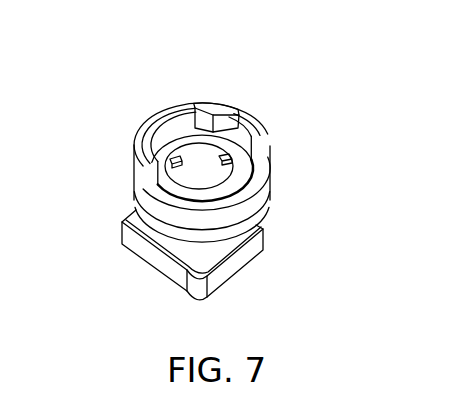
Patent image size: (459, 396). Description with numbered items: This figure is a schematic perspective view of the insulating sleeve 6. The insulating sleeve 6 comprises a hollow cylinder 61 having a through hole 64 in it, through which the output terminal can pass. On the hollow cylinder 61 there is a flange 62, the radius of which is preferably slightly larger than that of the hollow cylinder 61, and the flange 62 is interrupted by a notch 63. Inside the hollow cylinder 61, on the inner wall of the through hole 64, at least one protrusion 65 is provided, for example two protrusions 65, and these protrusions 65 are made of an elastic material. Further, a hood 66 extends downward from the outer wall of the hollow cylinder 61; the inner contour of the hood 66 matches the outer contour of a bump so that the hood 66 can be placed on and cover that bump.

The insulating sleeve 6 is at (201, 157).
The hollow cylinder 61 is at (163, 224).
The flange 62 is at (141, 161).
The notch 63 is at (237, 142).
The through hole 64 is at (192, 181).
The protrusion 65 is at (227, 158).
The hood 66 is at (163, 258).